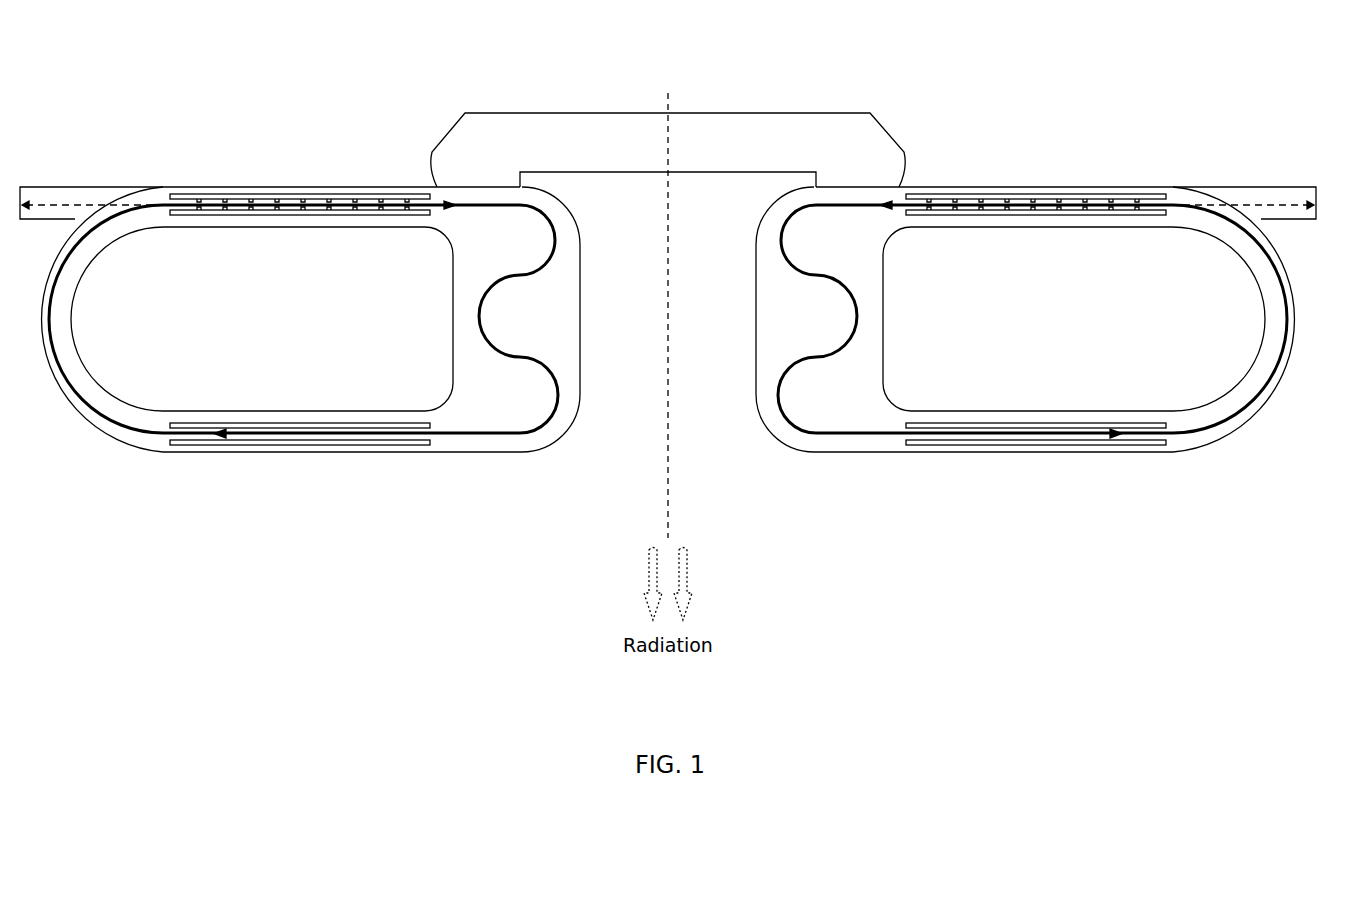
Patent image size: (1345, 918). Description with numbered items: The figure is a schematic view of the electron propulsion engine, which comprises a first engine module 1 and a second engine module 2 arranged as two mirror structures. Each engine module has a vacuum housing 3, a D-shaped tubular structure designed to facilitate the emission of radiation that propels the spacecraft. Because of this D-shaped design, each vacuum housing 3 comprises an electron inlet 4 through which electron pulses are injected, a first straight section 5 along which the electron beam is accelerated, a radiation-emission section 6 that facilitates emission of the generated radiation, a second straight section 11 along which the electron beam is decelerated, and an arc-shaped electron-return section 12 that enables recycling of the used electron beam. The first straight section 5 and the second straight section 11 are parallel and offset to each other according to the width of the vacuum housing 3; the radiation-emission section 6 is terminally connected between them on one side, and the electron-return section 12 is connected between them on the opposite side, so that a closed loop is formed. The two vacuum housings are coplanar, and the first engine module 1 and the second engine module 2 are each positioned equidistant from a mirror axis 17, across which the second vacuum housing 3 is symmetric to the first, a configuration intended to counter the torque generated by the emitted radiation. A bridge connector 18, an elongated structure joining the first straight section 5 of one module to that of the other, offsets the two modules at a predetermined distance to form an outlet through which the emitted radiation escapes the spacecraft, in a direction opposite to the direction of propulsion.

The first engine module 1 is at (286, 138).
The second engine module 2 is at (1021, 133).
The vacuum housing 3 is at (463, 350).
The electron inlet 4 is at (45, 198).
The first straight section 5 is at (342, 190).
The radiation-emission section 6 is at (508, 331).
The second straight section 11 is at (288, 452).
The electron-return section 12 is at (57, 390).
The mirror axis 17 is at (670, 460).
The bridge connector 18 is at (604, 122).